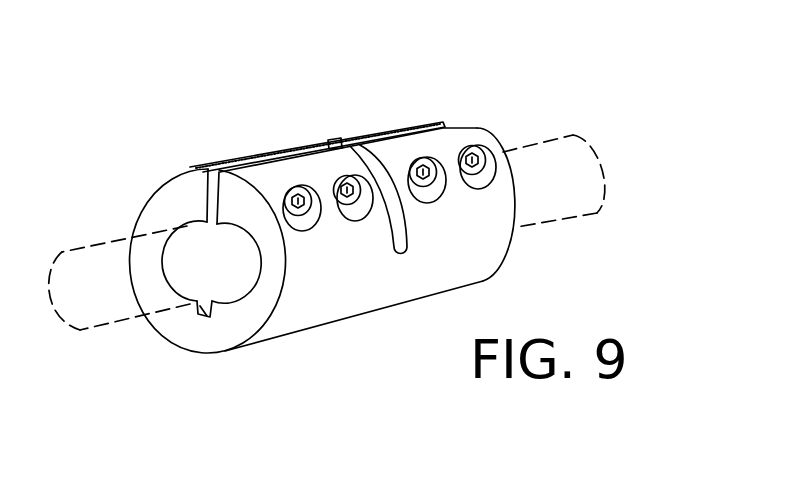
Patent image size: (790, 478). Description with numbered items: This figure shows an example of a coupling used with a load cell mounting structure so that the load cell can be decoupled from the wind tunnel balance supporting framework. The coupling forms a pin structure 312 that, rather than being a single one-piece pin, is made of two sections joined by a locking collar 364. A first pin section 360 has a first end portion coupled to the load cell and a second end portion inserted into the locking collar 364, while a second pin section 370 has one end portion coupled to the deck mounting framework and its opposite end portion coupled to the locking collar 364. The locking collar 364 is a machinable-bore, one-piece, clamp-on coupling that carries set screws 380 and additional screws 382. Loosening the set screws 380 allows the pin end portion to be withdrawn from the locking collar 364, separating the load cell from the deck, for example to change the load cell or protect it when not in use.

The pin structure 312 is at (333, 127).
The first pin section 360 is at (527, 146).
The locking collar 364 is at (343, 290).
The second pin section 370 is at (83, 329).
The set screws 380 is at (347, 184).
The set screws 382 is at (423, 165).